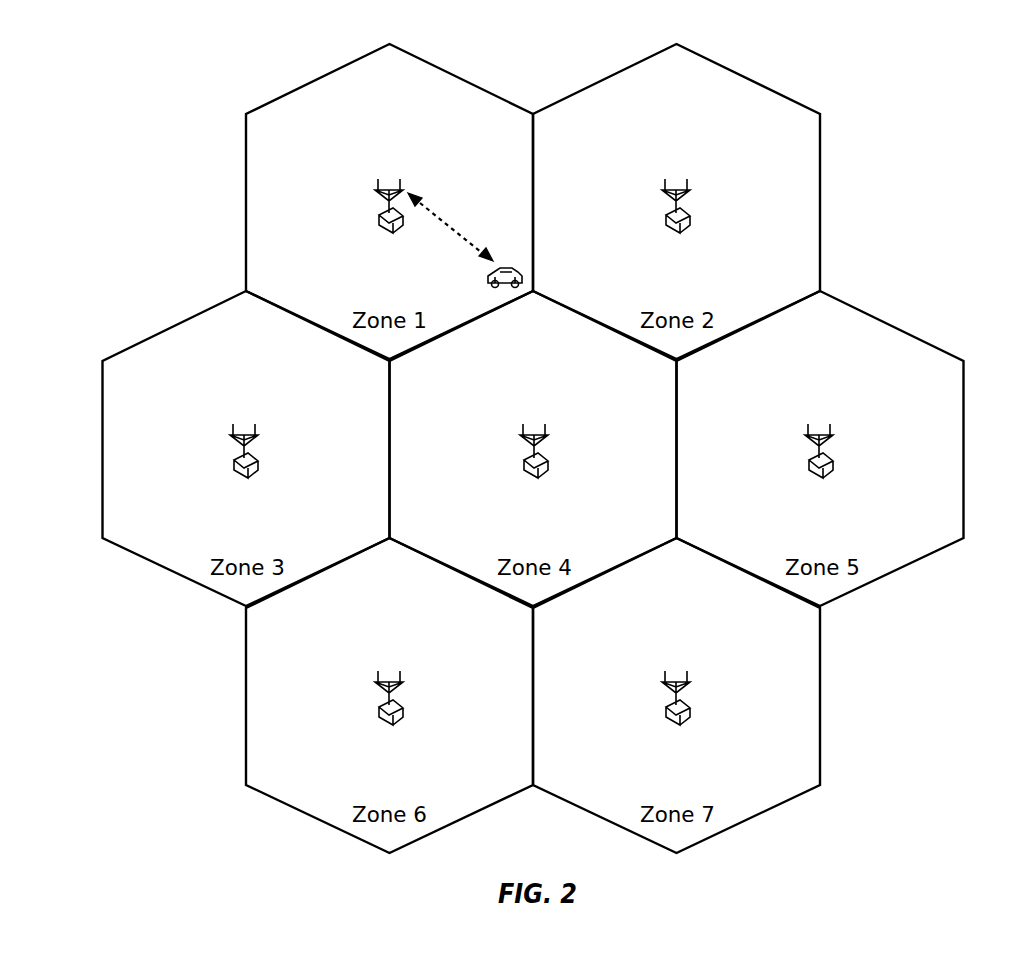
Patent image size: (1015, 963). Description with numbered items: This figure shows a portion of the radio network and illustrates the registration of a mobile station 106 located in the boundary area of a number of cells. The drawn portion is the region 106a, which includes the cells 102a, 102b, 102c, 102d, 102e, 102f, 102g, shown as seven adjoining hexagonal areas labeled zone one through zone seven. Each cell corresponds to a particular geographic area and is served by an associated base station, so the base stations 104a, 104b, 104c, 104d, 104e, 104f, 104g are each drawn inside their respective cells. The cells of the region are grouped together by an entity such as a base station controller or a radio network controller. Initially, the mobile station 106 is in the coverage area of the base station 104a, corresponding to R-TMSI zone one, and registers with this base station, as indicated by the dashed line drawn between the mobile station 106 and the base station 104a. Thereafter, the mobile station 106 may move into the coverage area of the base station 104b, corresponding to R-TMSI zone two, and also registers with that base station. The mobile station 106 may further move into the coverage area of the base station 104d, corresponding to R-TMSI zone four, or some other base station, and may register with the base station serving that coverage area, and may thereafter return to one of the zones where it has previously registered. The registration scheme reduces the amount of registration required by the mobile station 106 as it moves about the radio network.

The cell 102a is at (320, 77).
The cell 102b is at (747, 78).
The cell 102c is at (180, 322).
The cell 102d is at (549, 331).
The cell 102e is at (890, 324).
The cell 102f is at (246, 702).
The cell 102g is at (820, 702).
The base station 104a is at (375, 196).
The base station 104b is at (689, 196).
The base station 104c is at (259, 441).
The base station 104d is at (548, 441).
The base station 104e is at (833, 441).
The base station 104f is at (403, 688).
The base station 104g is at (690, 688).
The mobile station 106 is at (498, 264).
The region 106a is at (975, 60).